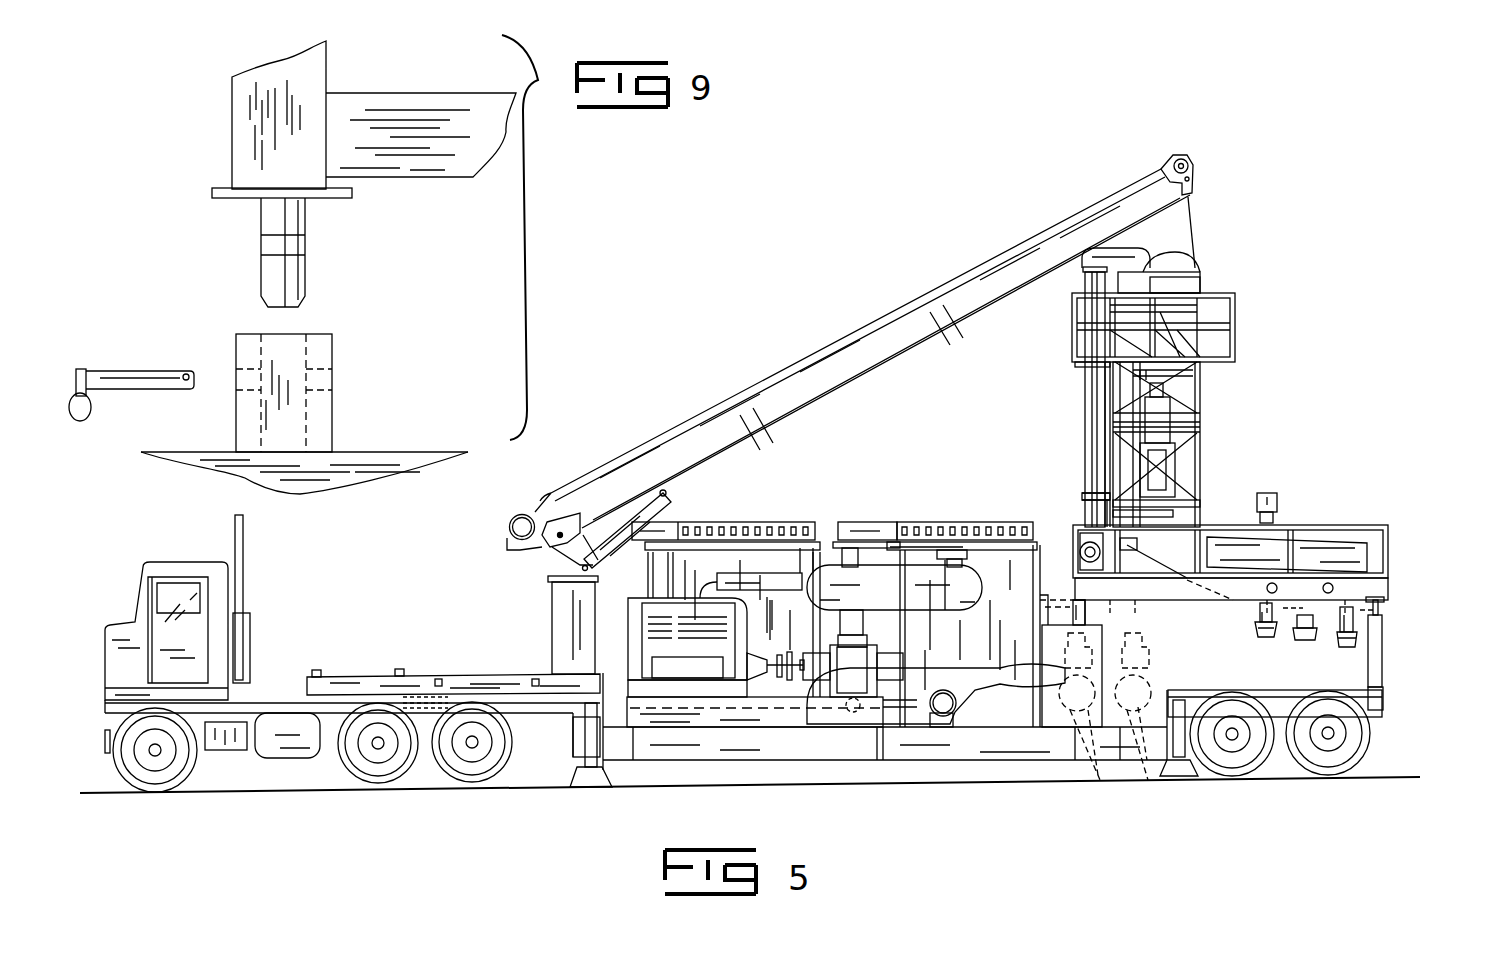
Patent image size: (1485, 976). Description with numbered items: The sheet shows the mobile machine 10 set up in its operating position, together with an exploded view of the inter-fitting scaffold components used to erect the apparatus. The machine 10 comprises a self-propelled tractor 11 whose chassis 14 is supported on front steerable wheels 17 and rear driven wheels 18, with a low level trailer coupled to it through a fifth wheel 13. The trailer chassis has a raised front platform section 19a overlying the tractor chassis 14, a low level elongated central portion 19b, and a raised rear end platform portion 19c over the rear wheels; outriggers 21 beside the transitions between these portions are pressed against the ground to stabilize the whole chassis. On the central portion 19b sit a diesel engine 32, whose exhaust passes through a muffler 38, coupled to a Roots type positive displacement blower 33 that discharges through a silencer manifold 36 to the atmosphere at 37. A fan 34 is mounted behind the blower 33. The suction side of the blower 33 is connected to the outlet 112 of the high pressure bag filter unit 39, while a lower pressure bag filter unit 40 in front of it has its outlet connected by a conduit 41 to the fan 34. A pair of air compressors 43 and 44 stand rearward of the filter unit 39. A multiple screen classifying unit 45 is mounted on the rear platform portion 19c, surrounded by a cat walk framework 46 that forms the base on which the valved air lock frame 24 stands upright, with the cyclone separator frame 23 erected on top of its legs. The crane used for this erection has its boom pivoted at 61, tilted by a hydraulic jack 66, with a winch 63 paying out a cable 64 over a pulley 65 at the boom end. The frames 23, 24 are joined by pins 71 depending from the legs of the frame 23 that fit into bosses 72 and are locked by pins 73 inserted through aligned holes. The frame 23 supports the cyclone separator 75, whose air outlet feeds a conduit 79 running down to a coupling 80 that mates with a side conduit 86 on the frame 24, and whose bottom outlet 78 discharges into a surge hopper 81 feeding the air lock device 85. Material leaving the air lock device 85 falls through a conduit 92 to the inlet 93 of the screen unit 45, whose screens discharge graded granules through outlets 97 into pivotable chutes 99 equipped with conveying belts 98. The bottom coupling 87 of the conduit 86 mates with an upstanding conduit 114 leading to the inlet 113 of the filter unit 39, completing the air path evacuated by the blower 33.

In FIG. 5, the mobile machine 10 is at (797, 326).
In FIG. 5, the self-propelled tractor 11 is at (181, 555).
In FIG. 5, the fifth wheel 13 is at (330, 708).
In FIG. 5, the chassis 14 is at (332, 730).
In FIG. 5, the front steerable wheels 17 is at (175, 772).
In FIG. 5, the rear driven wheels 18 is at (472, 773).
In FIG. 5, the raised front platform section 19a is at (415, 680).
In FIG. 5, the low level elongated central portion 19b is at (910, 747).
In FIG. 5, the raised rear end platform portion 19c is at (1368, 692).
In FIG. 5, the outriggers 21 is at (605, 790).
In FIG. 9, the cyclone separator frame 23 is at (218, 103).
In FIG. 5, the cyclone separator frame 23 is at (1245, 322).
In FIG. 9, the valved air lock frame 24 is at (346, 403).
In FIG. 5, the valved air lock frame 24 is at (1210, 451).
In FIG. 5, the diesel engine 32 is at (687, 647).
In FIG. 5, the positive displacement rotary piston pressure blower 33 is at (847, 682).
In FIG. 5, the fan 34 is at (960, 712).
In FIG. 5, the silencer manifold 36 is at (894, 606).
In FIG. 5, the atmosphere discharge 37 is at (967, 545).
In FIG. 5, the muffler 38 is at (768, 588).
In FIG. 5, the high pressure bag filter unit 39 is at (903, 523).
In FIG. 5, the lower pressure bag filter unit 40 is at (735, 523).
In FIG. 5, the conduit 41 is at (655, 572).
In FIG. 5, the air compressor 43 is at (1072, 718).
In FIG. 5, the air compressor 44 is at (1139, 722).
In FIG. 5, the multiple screen classifying unit 45 is at (1315, 533).
In FIG. 5, the cat walk framework 46 is at (1398, 533).
In FIG. 5, the pivot 61 is at (558, 537).
In FIG. 5, the winch 63 is at (508, 535).
In FIG. 5, the cable 64 is at (952, 280).
In FIG. 5, the pulley 65 is at (1192, 162).
In FIG. 5, the hydraulic jack 66 is at (618, 547).
In FIG. 9, the pins 71 is at (301, 284).
In FIG. 9, the bosses 72 is at (334, 356).
In FIG. 9, the pins 73 is at (122, 380).
In FIG. 5, the cyclone separator 75 is at (1143, 282).
In FIG. 5, the outlet 78 is at (1140, 373).
In FIG. 5, the conduit 79 is at (1093, 282).
In FIG. 5, the coupling 80 is at (1082, 367).
In FIG. 5, the surge hopper 81 is at (1157, 373).
In FIG. 5, the air lock device 85 is at (1170, 439).
In FIG. 5, the conduit 86 is at (1097, 423).
In FIG. 5, the bottom coupling 87 is at (1087, 497).
In FIG. 5, the conduit 92 is at (1163, 507).
In FIG. 5, the inlet 93 is at (1140, 517).
In FIG. 5, the outlets 97 is at (1293, 630).
In FIG. 5, the belts 98 is at (1380, 625).
In FIG. 5, the chutes 99 is at (1263, 640).
In FIG. 5, the outlet 112 is at (848, 523).
In FIG. 5, the inlet 113 is at (1037, 617).
In FIG. 5, the upstanding conduit 114 is at (1095, 515).